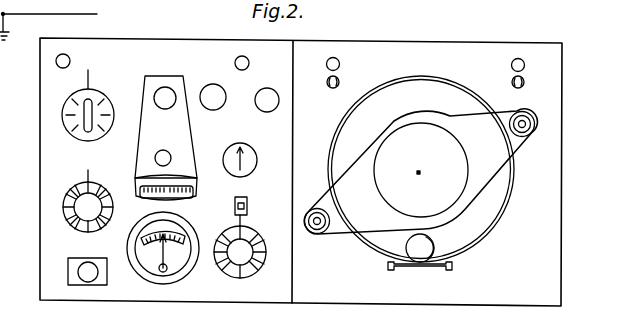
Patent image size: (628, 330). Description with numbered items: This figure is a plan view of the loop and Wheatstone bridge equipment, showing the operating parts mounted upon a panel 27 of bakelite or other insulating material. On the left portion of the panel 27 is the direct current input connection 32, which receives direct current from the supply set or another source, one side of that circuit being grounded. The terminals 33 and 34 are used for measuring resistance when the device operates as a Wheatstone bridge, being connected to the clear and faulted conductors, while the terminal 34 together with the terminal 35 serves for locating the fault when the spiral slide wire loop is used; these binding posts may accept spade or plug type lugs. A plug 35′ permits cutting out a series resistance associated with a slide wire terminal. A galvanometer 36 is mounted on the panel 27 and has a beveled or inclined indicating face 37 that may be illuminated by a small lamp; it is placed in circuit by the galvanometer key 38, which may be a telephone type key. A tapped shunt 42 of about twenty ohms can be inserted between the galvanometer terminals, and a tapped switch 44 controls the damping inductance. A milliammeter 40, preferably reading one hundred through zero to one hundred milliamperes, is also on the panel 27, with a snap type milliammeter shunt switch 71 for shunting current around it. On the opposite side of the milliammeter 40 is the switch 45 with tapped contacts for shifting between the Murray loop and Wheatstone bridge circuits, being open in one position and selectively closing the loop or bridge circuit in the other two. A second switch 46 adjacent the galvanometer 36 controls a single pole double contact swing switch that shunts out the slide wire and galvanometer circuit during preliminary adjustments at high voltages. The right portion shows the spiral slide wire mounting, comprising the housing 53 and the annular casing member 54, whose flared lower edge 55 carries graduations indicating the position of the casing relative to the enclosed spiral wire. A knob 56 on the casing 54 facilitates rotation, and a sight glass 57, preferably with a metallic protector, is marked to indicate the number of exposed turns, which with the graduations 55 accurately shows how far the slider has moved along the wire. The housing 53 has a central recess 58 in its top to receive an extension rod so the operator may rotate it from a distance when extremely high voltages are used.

The panel 27 is at (45, 240).
The direct current input connection 32 is at (57, 64).
The terminal 33 is at (241, 56).
The terminal 34 is at (335, 58).
The terminal 35 is at (522, 60).
The plug 35′ is at (340, 78).
The galvanometer 36 is at (150, 112).
The indicating face 37 is at (197, 188).
The galvanometer key 38 is at (68, 270).
The milliammeter 40 is at (176, 268).
The tapped shunt 42 is at (62, 116).
The tapped switch 44 is at (63, 207).
The switch 45 is at (258, 240).
The second switch 46 is at (251, 162).
The housing 53 is at (435, 141).
The annular casing member 54 is at (500, 185).
The flared lower edge 55 is at (510, 204).
The knob 56 is at (430, 249).
The sight glass 57 is at (452, 268).
The recess 58 is at (424, 160).
The milliammeter shunt switch 71 is at (235, 205).